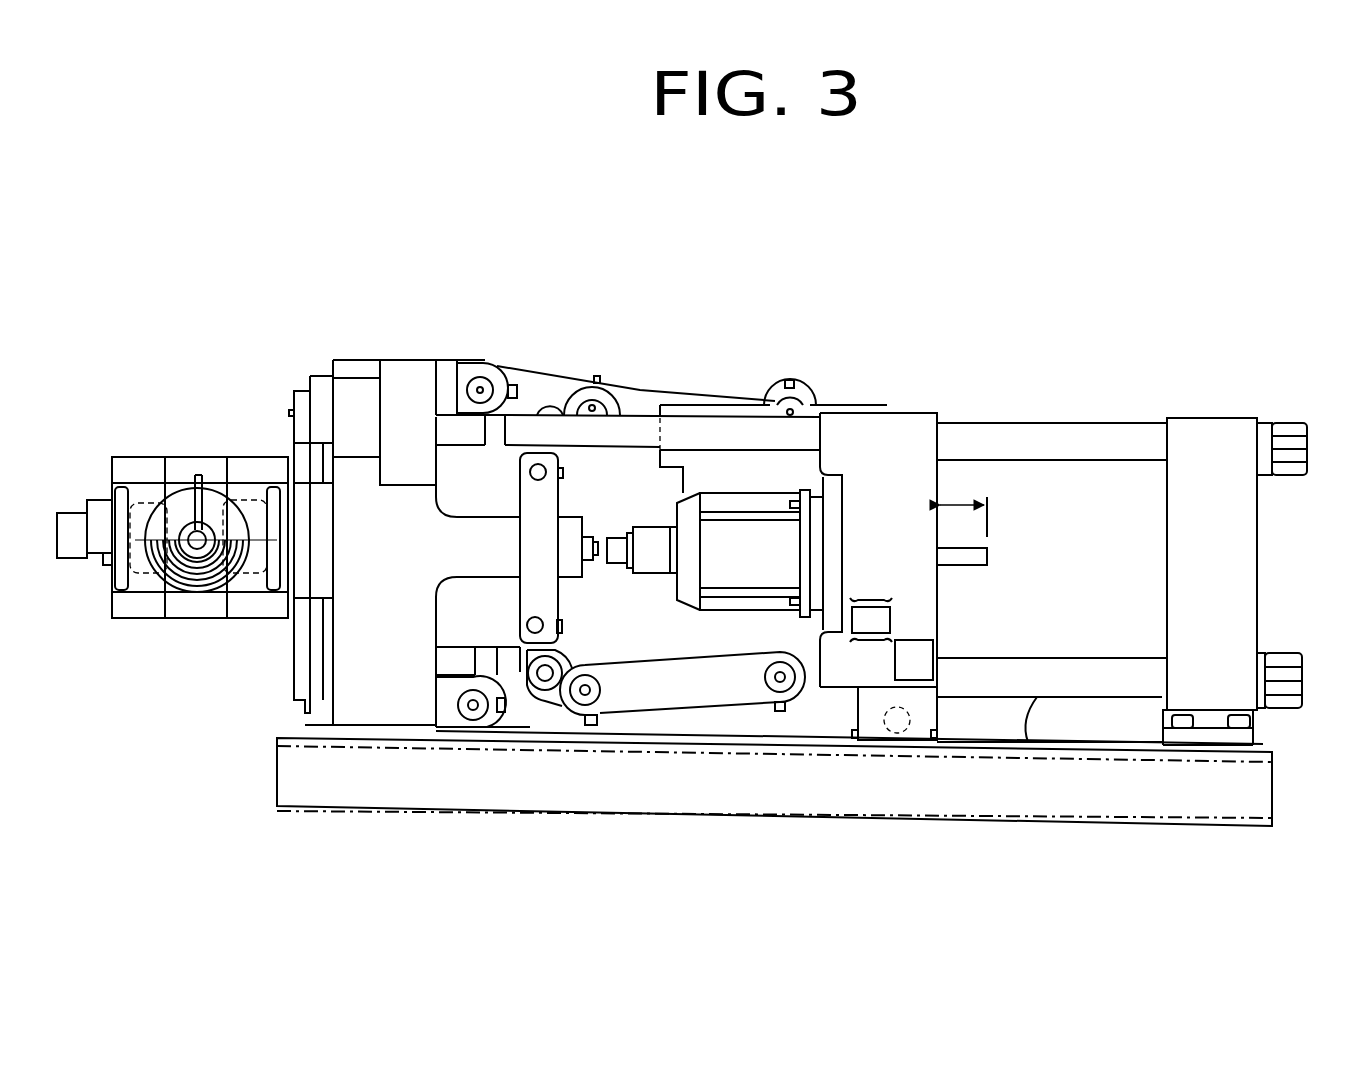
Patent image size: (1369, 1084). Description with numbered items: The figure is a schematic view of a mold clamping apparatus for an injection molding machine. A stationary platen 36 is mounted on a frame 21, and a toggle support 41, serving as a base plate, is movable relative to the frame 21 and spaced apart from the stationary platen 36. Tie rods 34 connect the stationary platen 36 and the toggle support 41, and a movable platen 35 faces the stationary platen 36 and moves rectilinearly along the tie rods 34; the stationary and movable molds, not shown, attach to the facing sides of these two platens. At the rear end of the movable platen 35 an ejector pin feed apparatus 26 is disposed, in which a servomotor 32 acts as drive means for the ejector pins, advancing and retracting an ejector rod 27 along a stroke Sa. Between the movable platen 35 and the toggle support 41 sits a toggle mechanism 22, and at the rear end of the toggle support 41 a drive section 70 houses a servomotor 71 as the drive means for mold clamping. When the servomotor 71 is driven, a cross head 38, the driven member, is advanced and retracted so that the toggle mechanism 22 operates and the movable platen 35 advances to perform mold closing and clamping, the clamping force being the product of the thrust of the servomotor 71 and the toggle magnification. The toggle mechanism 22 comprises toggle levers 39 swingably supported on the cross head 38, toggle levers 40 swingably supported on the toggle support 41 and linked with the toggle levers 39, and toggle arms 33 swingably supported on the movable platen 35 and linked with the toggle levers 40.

The frame 21 is at (912, 797).
The toggle mechanism 22 is at (620, 790).
The ejector pin feed apparatus 26 is at (734, 481).
The ejector rod 27 is at (965, 567).
The servomotor 32 is at (724, 500).
The toggle arms 33 is at (693, 705).
The tie rods 34 is at (1033, 697).
The movable platen 35 is at (918, 416).
The stationary platen 36 is at (1208, 428).
The cross head 38 is at (558, 597).
The toggle levers 39 is at (561, 706).
The toggle levers 40 is at (530, 730).
The toggle support 41 is at (358, 703).
The drive section 70 is at (251, 400).
The servomotor 71 is at (197, 457).
The stroke Sa is at (963, 501).